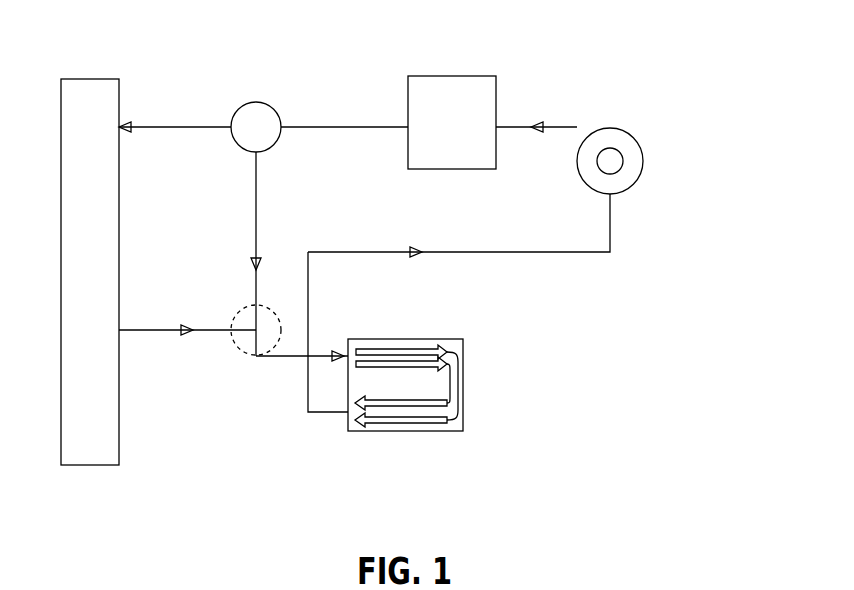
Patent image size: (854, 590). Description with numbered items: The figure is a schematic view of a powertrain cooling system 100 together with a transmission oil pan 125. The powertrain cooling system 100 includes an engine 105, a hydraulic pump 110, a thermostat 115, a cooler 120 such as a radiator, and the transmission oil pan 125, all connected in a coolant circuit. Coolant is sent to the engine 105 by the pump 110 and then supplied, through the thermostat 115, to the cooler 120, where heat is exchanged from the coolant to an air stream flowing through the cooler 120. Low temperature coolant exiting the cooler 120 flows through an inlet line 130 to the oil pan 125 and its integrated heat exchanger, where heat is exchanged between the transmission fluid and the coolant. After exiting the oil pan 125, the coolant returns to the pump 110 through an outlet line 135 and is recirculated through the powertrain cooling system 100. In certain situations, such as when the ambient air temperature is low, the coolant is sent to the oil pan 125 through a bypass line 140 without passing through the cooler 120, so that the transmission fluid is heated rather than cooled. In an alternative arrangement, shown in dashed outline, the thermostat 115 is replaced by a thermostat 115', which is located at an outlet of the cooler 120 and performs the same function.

The powertrain cooling system 100 is at (635, 50).
The engine 105 is at (496, 88).
The hydraulic pump 110 is at (641, 146).
The thermostat 115 is at (292, 111).
The thermostat 115' is at (242, 355).
The cooler 120 is at (119, 292).
The transmission oil pan 125 is at (463, 381).
The inlet line 130 is at (281, 357).
The outlet line 135 is at (308, 313).
The bypass line 140 is at (256, 205).